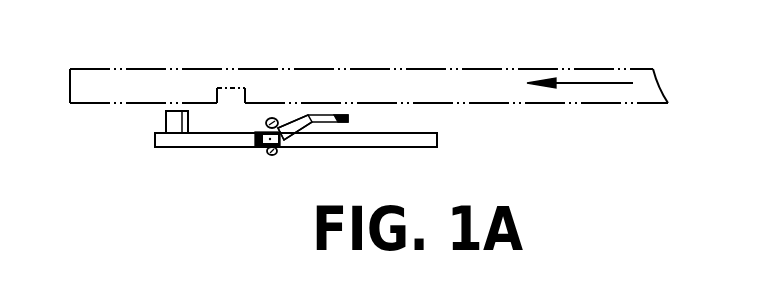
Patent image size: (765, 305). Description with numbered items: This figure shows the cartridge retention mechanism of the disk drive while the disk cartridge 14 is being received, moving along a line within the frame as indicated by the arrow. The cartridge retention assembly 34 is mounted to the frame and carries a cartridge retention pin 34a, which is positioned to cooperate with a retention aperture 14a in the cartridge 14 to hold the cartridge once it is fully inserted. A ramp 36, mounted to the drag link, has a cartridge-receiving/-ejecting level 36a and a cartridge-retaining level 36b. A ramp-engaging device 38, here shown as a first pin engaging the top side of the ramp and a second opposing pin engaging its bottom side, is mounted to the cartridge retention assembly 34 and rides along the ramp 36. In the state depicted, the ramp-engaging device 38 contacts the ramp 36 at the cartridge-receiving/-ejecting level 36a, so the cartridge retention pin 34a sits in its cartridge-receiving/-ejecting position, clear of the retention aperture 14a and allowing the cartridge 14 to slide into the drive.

The disk cartridge 14 is at (480, 69).
The retention aperture 14a is at (232, 97).
The cartridge retention assembly 34 is at (400, 147).
The cartridge retention pin 34a is at (166, 121).
The ramp 36 is at (308, 118).
The cartridge-receiving/-ejecting level 36a is at (258, 147).
The cartridge-retaining level 36b is at (322, 122).
The ramp-engaging device 38 is at (274, 155).